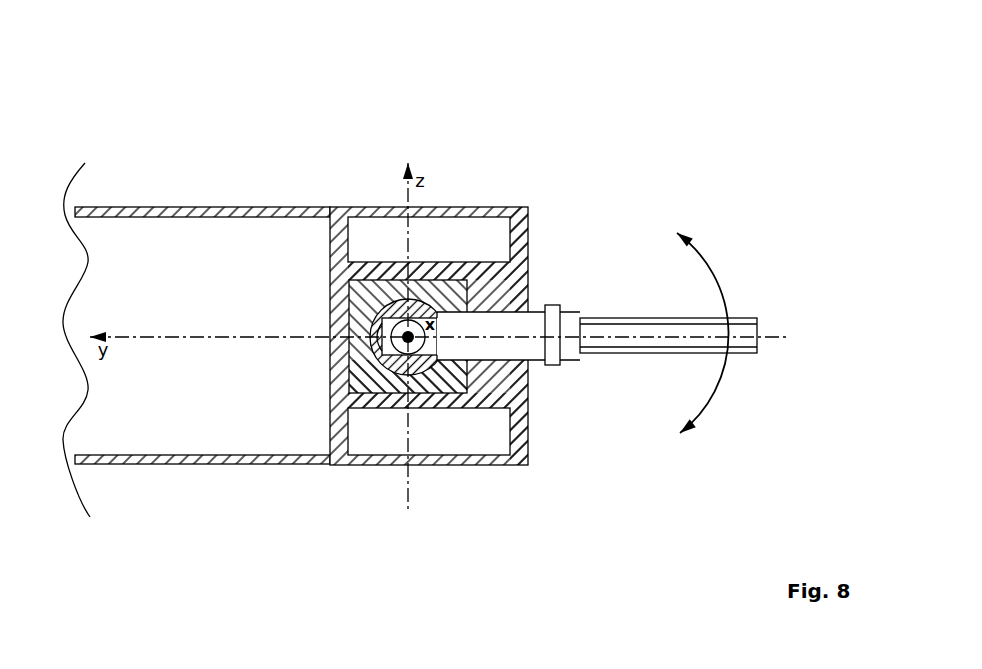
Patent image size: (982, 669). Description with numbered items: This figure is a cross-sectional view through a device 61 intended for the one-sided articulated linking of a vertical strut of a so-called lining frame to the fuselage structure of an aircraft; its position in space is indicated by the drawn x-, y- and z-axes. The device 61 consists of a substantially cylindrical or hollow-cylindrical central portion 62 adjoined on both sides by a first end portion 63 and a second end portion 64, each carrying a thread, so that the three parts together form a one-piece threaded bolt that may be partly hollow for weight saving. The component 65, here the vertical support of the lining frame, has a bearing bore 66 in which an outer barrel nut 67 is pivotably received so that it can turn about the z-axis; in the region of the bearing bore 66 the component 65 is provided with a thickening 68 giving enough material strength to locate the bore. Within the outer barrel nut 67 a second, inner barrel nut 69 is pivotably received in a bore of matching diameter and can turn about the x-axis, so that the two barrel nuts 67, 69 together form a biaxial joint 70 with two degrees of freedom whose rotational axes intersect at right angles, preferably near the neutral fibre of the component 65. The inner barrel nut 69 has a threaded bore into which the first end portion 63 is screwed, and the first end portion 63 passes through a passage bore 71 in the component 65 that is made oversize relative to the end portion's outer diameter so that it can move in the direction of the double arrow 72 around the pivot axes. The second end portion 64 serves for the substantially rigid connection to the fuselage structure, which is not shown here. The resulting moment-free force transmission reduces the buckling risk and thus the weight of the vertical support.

The device 61 is at (458, 115).
The central portion 62 is at (572, 362).
The first end portion 63 is at (477, 347).
The second end portion 64 is at (677, 340).
The component 65 is at (518, 226).
The bearing bore 66 is at (387, 278).
The outer barrel nut 67 is at (445, 380).
The thickening 68 is at (525, 267).
The inner barrel nut 69 is at (395, 355).
The joint 70 is at (338, 313).
The passage bore 71 is at (503, 314).
The double arrow 72 is at (719, 268).